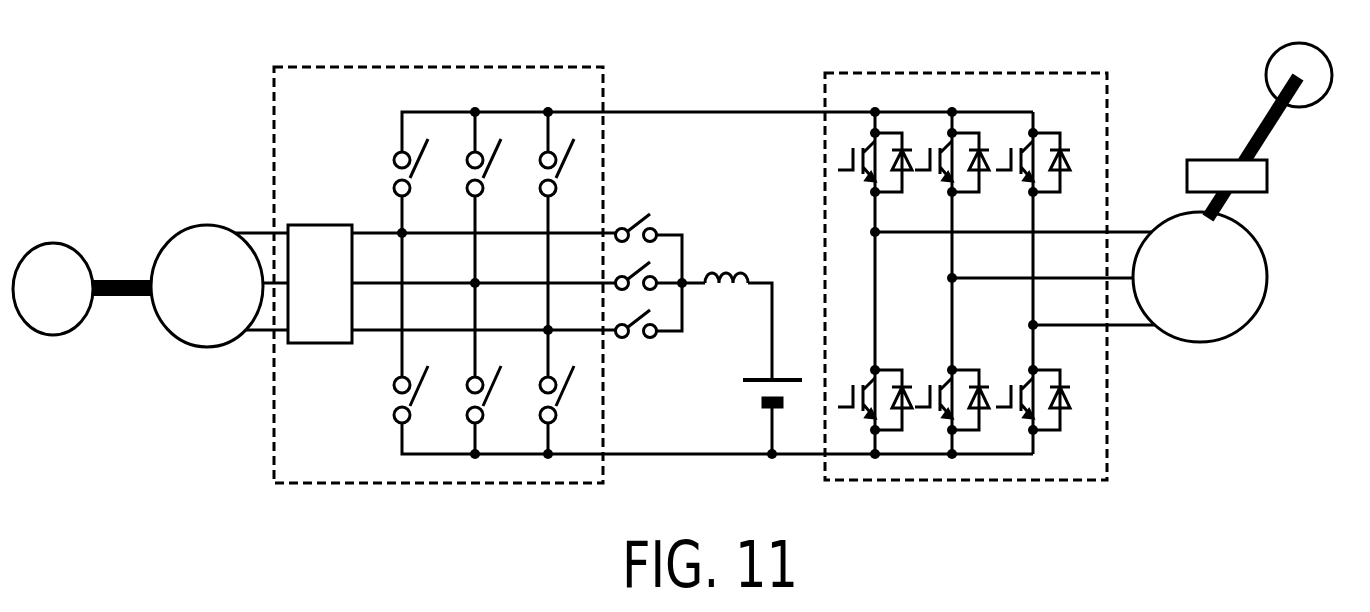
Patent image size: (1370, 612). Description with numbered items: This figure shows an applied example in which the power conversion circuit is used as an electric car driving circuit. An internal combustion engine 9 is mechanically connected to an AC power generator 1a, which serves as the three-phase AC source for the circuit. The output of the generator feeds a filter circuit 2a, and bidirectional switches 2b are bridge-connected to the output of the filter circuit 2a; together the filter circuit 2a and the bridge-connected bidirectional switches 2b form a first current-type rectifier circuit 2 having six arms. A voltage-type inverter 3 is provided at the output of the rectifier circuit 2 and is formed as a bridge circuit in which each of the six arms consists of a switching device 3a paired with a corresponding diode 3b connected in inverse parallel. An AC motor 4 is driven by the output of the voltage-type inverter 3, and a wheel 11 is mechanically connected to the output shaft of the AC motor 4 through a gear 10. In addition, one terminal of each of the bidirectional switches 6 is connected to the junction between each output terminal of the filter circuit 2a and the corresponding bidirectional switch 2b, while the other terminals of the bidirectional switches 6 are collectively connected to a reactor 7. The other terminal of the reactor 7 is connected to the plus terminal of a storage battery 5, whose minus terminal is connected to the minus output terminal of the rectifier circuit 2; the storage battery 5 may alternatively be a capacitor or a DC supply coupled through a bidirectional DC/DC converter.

The internal combustion engine 9 is at (53, 289).
The AC power generator 1a is at (207, 286).
The first current-type rectifier circuit 2 is at (438, 275).
The filter circuit 2a is at (320, 284).
The bidirectional switches 2b is at (494, 273).
The bidirectional switches 6 is at (646, 270).
The reactor 7 is at (726, 258).
The storage battery 5 is at (768, 372).
The voltage-type inverter 3 is at (966, 276).
The switching devices 3a is at (938, 275).
The diodes 3b is at (984, 281).
The AC motor 4 is at (1200, 277).
The gear 10 is at (1250, 176).
The wheel 11 is at (1313, 73).